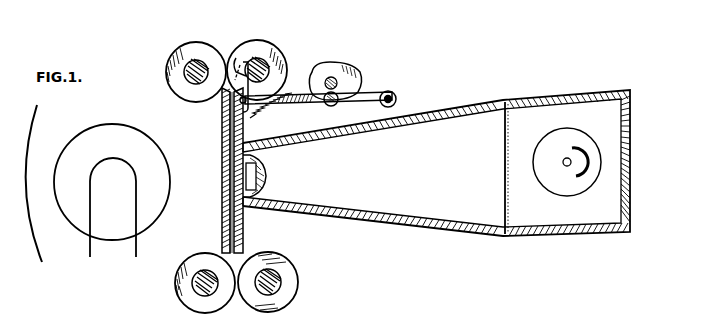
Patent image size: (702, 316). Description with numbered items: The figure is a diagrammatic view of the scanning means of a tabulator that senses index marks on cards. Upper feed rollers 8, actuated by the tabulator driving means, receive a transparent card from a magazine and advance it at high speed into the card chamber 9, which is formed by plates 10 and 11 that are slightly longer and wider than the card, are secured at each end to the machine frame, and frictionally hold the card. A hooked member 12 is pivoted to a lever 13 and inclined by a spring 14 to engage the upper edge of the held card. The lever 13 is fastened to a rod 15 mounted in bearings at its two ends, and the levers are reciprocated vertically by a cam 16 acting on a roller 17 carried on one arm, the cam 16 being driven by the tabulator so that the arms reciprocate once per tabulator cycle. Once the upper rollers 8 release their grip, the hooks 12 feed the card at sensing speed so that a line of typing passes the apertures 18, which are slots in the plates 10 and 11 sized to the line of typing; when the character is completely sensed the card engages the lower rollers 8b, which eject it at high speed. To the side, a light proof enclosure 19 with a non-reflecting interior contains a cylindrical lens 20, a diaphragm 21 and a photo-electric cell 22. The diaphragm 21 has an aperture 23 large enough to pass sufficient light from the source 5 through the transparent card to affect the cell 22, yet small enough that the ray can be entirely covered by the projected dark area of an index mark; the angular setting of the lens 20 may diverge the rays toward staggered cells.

The light source 5 is at (158, 210).
The upper feed rollers 8 is at (244, 48).
The lower rollers 8b is at (258, 254).
The card chamber 9 is at (222, 118).
The plate 10 is at (226, 126).
The plate 11 is at (246, 133).
The hooked member 12 is at (243, 60).
The lever 13 is at (297, 98).
The spring 14 is at (266, 108).
The rod 15 is at (397, 98).
The cam 16 is at (356, 74).
The roller 17 is at (332, 106).
The apertures 18 is at (230, 182).
The light proof enclosure 19 is at (527, 98).
The cylindrical lens 20 is at (268, 175).
The diaphragm 21 is at (502, 134).
The photo-electric cell 22 is at (579, 138).
The aperture 23 is at (503, 168).